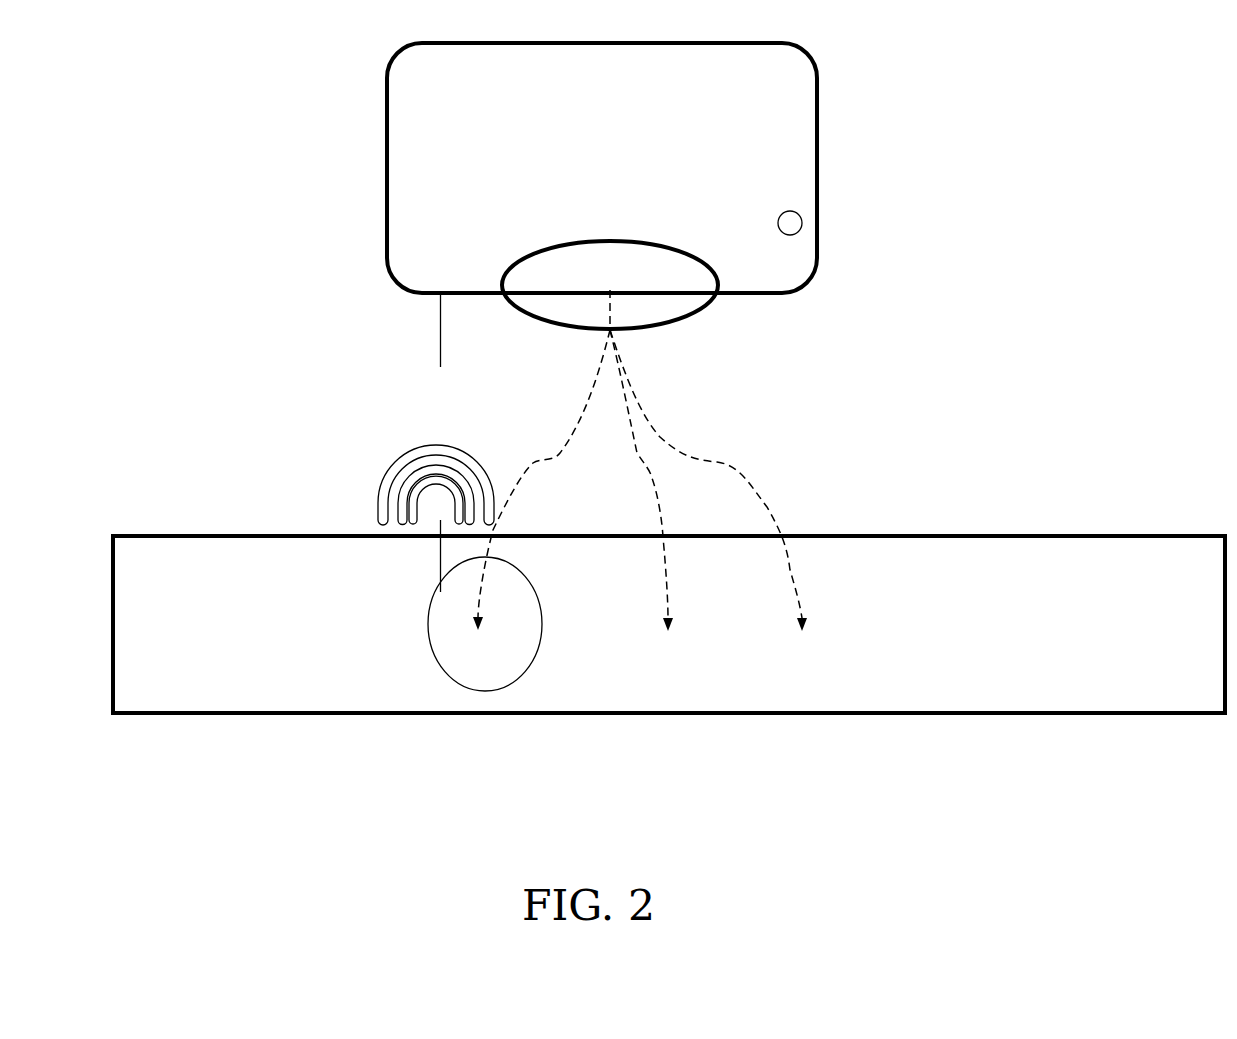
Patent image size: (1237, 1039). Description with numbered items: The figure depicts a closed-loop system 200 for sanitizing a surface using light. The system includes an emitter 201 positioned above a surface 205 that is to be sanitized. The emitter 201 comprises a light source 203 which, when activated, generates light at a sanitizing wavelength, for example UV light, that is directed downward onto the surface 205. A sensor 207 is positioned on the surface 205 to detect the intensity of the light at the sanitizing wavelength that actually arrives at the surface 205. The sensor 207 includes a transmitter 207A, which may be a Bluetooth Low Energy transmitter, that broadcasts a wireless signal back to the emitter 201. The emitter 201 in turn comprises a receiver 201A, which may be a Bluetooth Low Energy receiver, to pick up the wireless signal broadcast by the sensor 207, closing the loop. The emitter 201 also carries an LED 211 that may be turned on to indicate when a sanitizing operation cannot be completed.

The closed-loop system 200 is at (940, 357).
The emitter 201 is at (806, 116).
The receiver 201A is at (437, 312).
The light source 203 is at (693, 313).
The surface 205 is at (278, 683).
The sensor 207 is at (443, 641).
The transmitter 207A is at (437, 551).
The LED 211 is at (795, 226).